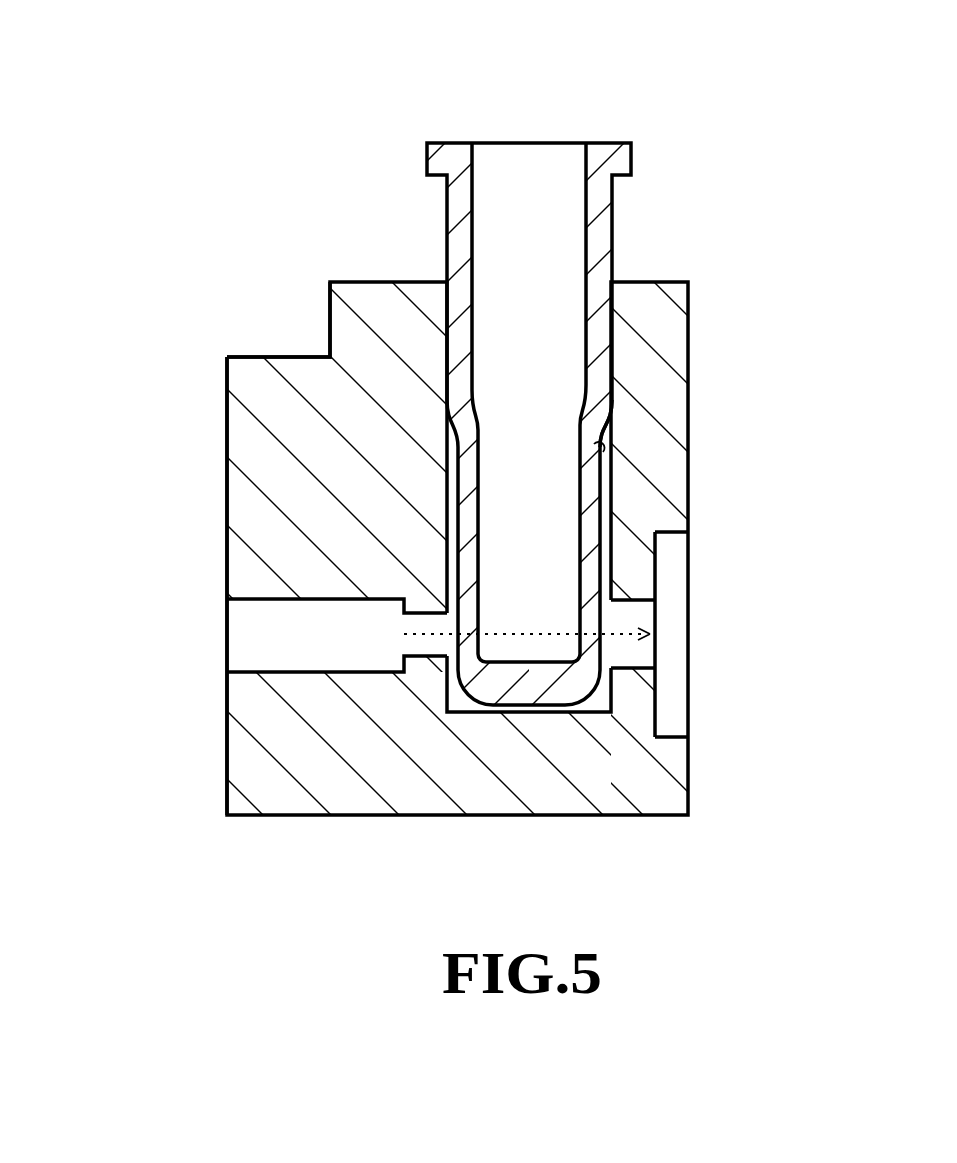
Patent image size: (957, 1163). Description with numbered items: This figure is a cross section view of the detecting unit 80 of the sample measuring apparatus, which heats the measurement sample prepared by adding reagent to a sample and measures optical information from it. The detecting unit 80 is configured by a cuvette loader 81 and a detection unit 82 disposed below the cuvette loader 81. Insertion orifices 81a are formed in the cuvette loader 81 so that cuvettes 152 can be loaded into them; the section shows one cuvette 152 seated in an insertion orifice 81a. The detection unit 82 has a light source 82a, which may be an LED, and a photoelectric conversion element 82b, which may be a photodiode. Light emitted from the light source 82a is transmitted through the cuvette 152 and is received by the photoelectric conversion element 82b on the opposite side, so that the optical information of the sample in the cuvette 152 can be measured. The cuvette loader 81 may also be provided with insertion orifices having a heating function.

The detecting unit 80 is at (317, 195).
The cuvette loader 81 is at (688, 347).
The insertion orifice 81a is at (603, 452).
The detection unit 82 is at (192, 523).
The light source 82a is at (255, 620).
The photoelectric conversion element 82b is at (673, 597).
The cuvette 152 is at (612, 202).